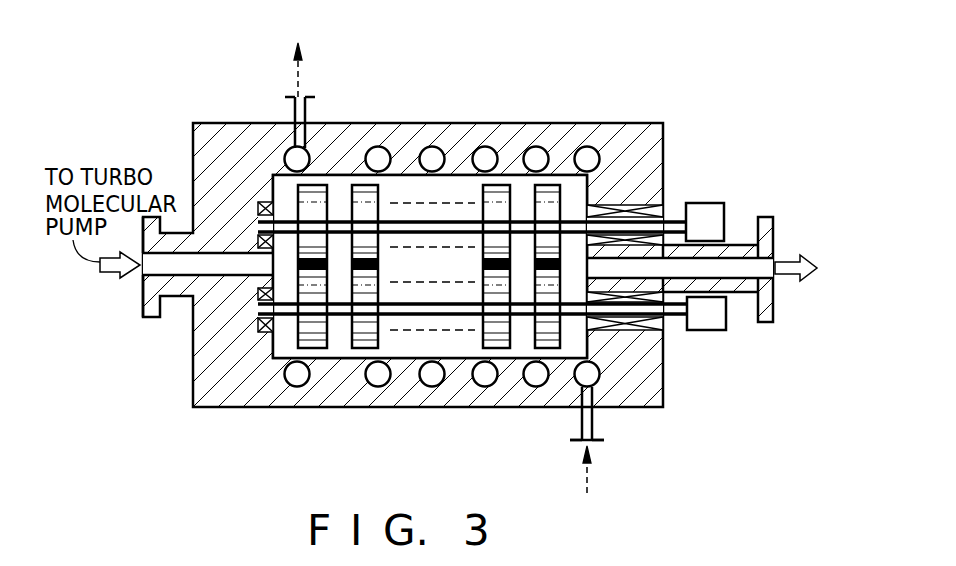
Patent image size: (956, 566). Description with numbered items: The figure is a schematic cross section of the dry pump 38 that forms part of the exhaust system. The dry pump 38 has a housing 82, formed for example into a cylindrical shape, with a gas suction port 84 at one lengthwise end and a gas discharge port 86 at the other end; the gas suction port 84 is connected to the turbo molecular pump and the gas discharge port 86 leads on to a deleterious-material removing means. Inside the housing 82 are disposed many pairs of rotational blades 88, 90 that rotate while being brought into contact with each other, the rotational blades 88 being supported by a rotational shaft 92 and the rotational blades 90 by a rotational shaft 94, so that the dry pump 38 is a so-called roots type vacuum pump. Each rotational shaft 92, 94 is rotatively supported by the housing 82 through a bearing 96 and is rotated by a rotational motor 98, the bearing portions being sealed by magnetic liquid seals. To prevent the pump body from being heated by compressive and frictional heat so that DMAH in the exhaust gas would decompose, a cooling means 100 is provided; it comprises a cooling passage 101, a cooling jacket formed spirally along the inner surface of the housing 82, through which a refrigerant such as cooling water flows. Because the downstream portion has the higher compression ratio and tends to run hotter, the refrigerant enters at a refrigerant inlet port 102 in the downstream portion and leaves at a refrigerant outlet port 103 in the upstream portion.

The dry pump 38 is at (588, 33).
The housing 82 is at (399, 116).
The gas suction port 84 is at (162, 268).
The gas discharge port 86 is at (757, 268).
The rotational blades 88 is at (499, 192).
The rotational blades 90 is at (312, 320).
The rotational shaft 92 is at (455, 221).
The rotational shaft 94 is at (413, 302).
The bearing 96 is at (657, 212).
The rotational motor 98 is at (712, 203).
The cooling means 100 is at (605, 428).
The cooling passage 101 is at (434, 148).
The refrigerant inlet port 102 is at (581, 427).
The refrigerant outlet port 103 is at (304, 121).